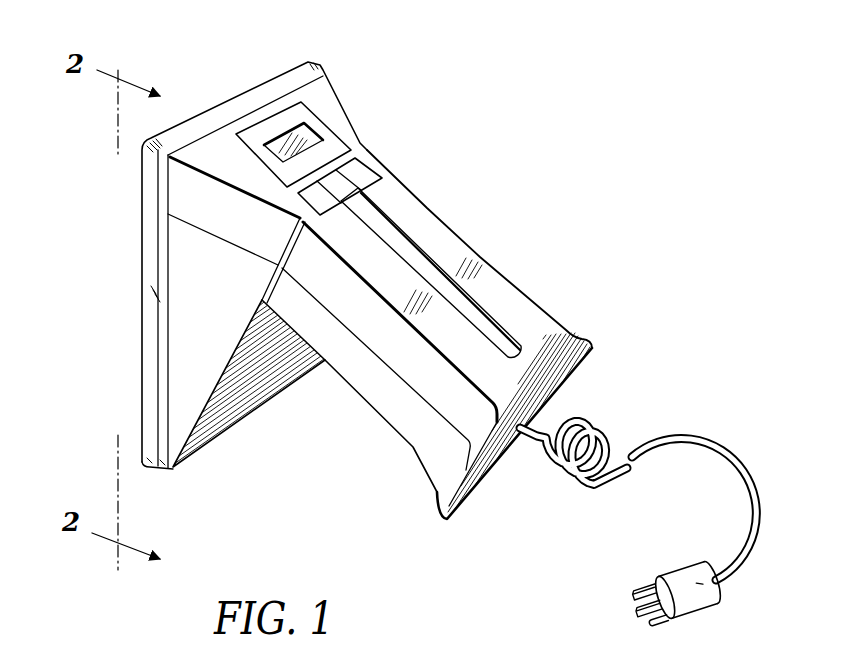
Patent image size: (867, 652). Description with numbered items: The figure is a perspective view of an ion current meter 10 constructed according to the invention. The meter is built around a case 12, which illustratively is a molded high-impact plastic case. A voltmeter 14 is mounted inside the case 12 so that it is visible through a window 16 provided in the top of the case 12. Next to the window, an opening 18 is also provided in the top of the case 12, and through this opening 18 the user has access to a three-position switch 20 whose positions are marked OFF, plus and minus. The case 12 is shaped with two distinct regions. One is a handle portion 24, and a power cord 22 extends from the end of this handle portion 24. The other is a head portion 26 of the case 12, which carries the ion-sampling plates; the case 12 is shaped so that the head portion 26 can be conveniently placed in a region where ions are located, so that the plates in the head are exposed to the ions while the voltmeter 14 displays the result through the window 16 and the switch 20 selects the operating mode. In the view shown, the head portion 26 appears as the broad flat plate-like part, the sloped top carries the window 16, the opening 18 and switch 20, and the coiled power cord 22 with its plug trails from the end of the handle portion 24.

The ion current meter 10 is at (600, 216).
The case 12 is at (515, 293).
The voltmeter 14 is at (314, 142).
The window 16 is at (283, 141).
The opening 18 is at (368, 181).
The three-position switch 20 is at (386, 153).
The power cord 22 is at (603, 490).
The handle portion 24 is at (396, 456).
The head portion 26 is at (118, 384).